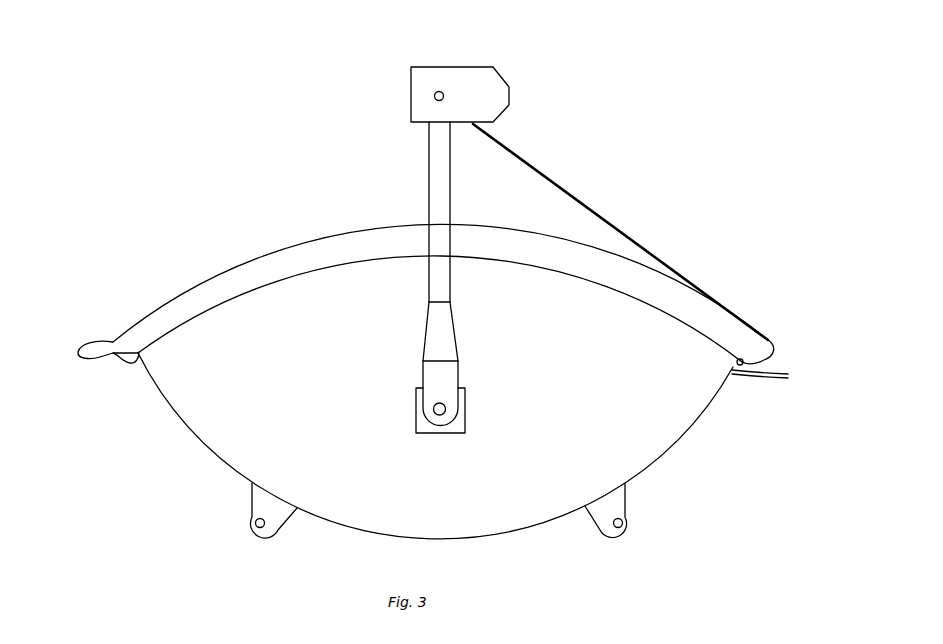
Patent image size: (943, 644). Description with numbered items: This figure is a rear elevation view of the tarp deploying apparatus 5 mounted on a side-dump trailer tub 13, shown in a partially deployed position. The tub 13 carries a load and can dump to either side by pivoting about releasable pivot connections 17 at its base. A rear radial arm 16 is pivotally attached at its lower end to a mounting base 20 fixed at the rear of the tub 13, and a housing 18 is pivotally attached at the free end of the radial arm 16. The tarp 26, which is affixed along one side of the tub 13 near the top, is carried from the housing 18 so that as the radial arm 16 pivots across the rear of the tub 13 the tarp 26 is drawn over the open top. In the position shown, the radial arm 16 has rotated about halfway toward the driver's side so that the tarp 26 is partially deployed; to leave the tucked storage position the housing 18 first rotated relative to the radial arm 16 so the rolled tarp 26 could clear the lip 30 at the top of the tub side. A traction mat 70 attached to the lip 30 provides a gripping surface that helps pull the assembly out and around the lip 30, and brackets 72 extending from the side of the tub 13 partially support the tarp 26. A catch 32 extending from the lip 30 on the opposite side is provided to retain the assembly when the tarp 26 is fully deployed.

The tarp deploying apparatus 5 is at (638, 161).
The tub 13 is at (220, 433).
The rear radial arm 16 is at (429, 188).
The releasable pivot connections 17 is at (252, 507).
The housing 18 is at (411, 95).
The mounting base 20 is at (416, 420).
The tarp 26 is at (607, 223).
The lip 30 is at (152, 315).
The catch 32 is at (80, 353).
The traction mat 70 is at (772, 343).
The brackets 72 is at (770, 380).